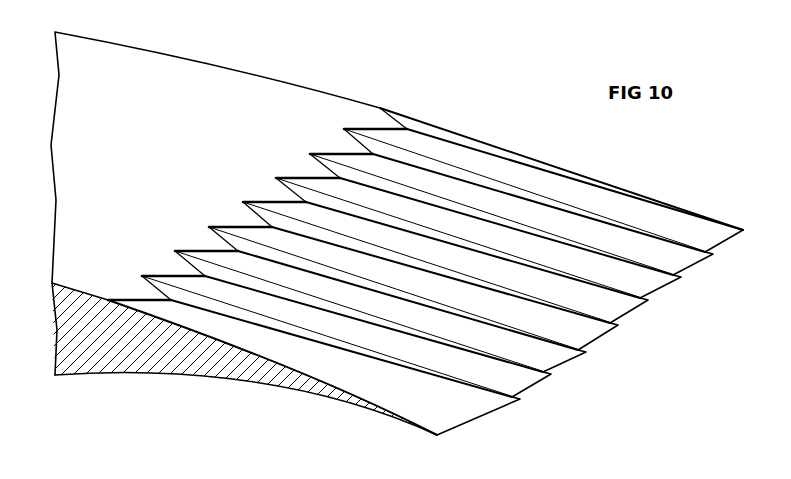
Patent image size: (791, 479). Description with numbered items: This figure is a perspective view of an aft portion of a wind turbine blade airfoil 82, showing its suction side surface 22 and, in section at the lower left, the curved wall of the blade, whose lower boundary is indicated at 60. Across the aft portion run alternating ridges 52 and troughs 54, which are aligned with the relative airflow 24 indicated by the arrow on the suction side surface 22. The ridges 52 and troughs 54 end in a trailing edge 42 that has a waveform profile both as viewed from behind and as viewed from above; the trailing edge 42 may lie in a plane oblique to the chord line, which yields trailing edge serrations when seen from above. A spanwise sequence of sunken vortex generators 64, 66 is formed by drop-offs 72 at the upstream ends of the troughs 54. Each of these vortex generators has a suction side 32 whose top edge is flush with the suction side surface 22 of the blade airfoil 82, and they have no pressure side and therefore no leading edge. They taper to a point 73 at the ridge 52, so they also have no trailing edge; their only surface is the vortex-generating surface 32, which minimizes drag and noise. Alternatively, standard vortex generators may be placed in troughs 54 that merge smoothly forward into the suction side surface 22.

The suction side surface 22 is at (166, 167).
The relative airflow 24 is at (147, 212).
The suction side of vortex generator 32 is at (225, 226).
The trailing edge 42 is at (594, 338).
The ridges 52 is at (685, 215).
The troughs 54 is at (423, 158).
The curved bottom surface / wall section 60 is at (102, 376).
The sunken vortex generator 64 is at (180, 266).
The sunken vortex generator 66 is at (206, 250).
The drop-off 72 is at (110, 300).
The point 73 is at (272, 226).
The blade airfoil 82 is at (345, 73).